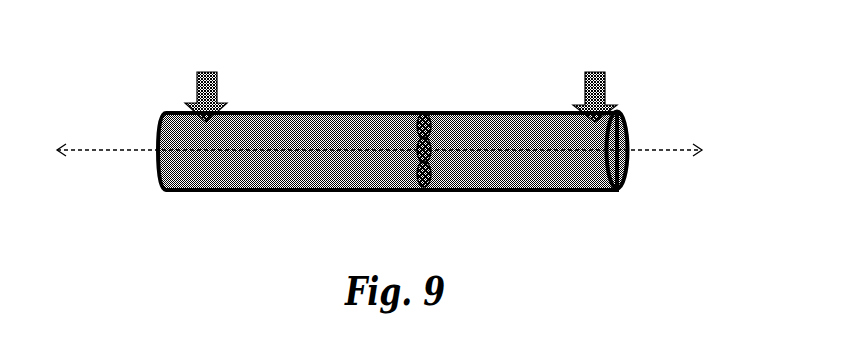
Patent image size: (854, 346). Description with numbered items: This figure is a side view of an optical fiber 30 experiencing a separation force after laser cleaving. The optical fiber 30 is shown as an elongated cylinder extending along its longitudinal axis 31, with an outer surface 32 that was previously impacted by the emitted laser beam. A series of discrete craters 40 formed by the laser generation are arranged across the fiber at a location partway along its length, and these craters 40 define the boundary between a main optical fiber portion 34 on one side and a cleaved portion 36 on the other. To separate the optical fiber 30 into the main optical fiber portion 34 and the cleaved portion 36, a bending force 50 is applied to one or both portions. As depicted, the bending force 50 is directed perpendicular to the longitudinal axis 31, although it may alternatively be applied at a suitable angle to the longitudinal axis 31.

The optical fiber 30 is at (366, 100).
The longitudinal axis 31 is at (660, 150).
The outer surface 32 is at (299, 127).
The main optical fiber portion 34 is at (297, 170).
The cleaved portion 36 is at (520, 158).
The discrete craters 40 is at (425, 113).
The bending force 50 is at (217, 70).